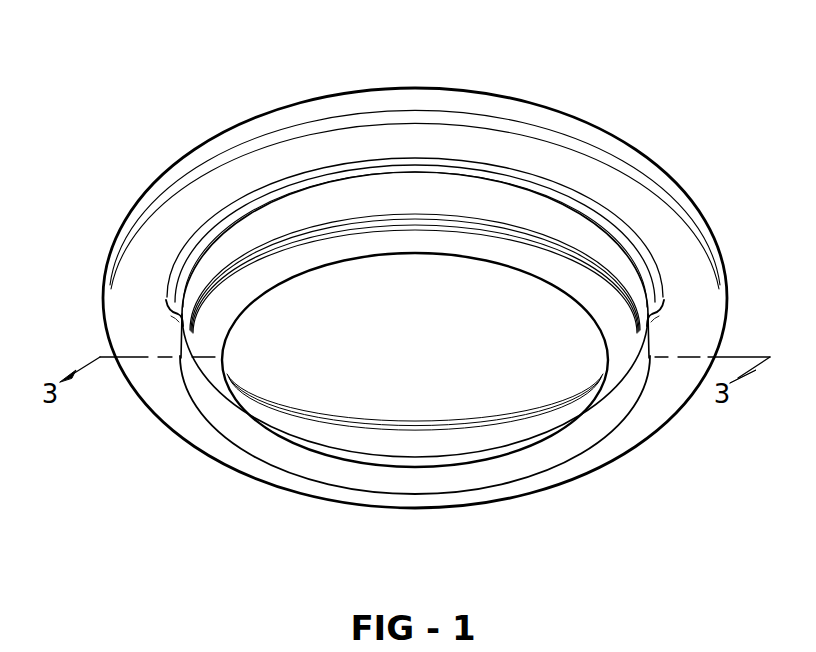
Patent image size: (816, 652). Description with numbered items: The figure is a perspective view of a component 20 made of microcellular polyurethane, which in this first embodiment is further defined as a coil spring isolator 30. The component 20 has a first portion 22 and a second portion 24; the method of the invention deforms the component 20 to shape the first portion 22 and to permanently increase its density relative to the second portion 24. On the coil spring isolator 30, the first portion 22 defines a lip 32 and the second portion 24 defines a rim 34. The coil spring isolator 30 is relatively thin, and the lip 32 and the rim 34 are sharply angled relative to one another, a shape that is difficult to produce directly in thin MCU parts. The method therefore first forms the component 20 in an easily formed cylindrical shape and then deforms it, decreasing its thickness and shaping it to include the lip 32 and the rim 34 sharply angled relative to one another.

The component 20 is at (375, 162).
The first portion 22 is at (378, 481).
The second portion 24 is at (580, 138).
The coil spring isolator 30 is at (143, 403).
The lip 32 is at (265, 453).
The rim 34 is at (493, 106).